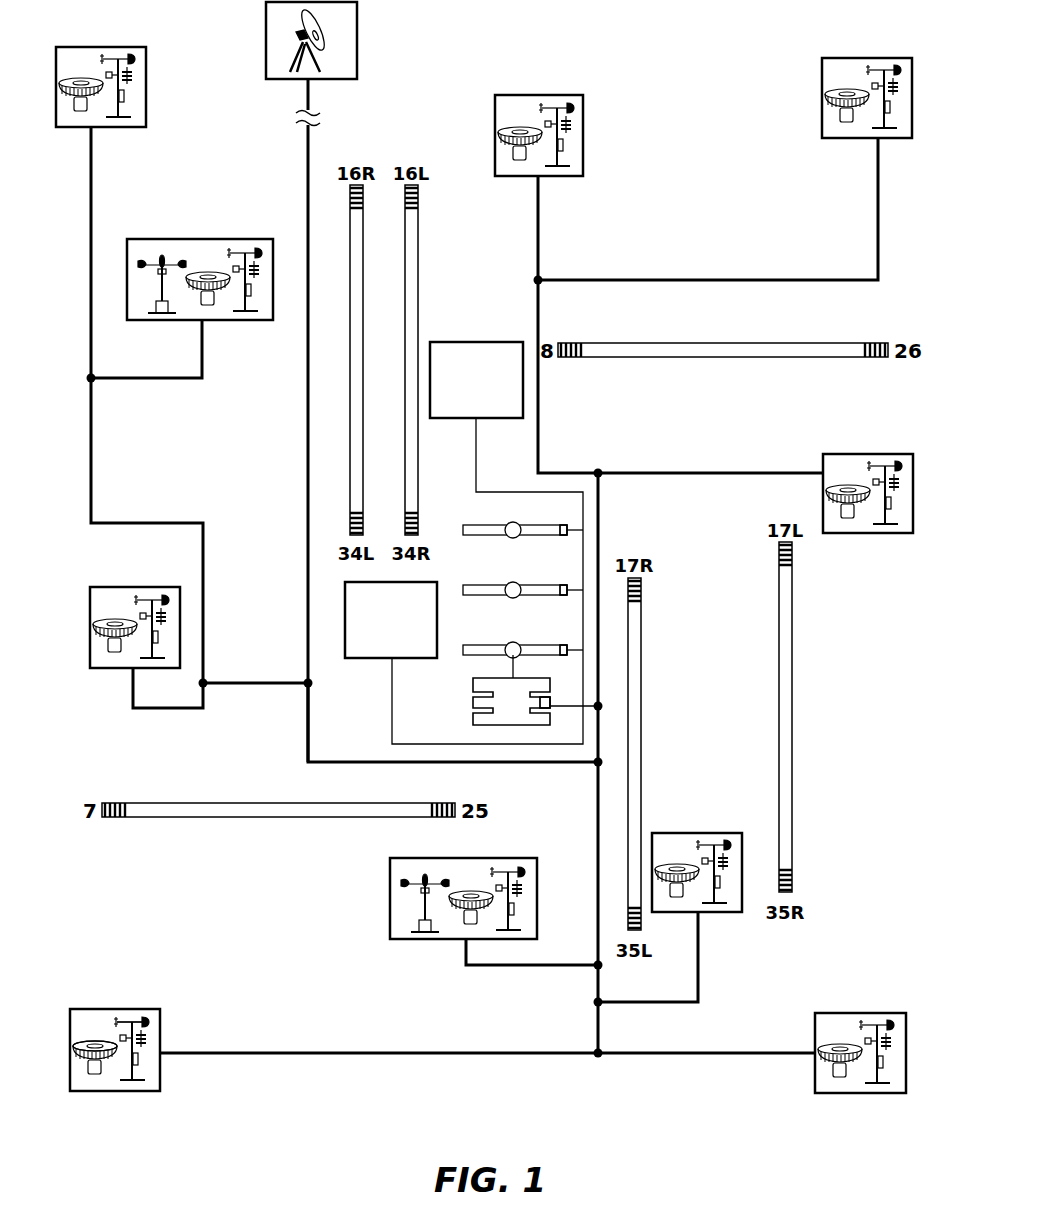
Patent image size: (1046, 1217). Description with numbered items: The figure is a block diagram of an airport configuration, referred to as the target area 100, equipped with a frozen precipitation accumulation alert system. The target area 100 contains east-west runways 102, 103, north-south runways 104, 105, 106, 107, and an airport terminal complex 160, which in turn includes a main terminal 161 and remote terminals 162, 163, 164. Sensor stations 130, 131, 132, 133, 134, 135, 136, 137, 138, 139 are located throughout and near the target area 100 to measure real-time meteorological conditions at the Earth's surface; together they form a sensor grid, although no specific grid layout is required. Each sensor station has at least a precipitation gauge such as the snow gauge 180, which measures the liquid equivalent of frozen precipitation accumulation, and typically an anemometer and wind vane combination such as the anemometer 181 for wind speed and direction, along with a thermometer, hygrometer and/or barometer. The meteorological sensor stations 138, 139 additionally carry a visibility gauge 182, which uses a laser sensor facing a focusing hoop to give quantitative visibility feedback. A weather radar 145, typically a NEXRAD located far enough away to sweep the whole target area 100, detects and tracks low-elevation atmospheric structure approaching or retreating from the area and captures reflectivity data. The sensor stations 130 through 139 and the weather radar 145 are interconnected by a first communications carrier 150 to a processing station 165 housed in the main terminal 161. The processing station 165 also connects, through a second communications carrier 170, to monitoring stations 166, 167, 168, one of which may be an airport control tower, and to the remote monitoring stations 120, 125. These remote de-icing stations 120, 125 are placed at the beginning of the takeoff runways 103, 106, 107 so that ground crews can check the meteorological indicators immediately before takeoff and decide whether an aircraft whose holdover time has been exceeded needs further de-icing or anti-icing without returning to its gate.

The target area 100 is at (672, 80).
The east-west runway 102 is at (233, 818).
The east-west runway 103 is at (737, 358).
The north-south runway 104 is at (642, 730).
The north-south runway 105 is at (793, 700).
The north-south runway 106 is at (364, 380).
The north-south runway 107 is at (419, 242).
The remote monitoring station 120 is at (363, 659).
The remote monitoring station 125 is at (501, 341).
The sensor station 130 is at (110, 1093).
The sensor station 131 is at (102, 669).
The sensor station 132 is at (146, 62).
The sensor station 133 is at (583, 120).
The sensor station 134 is at (822, 112).
The sensor station 135 is at (878, 534).
The sensor station 136 is at (718, 913).
The sensor station 137 is at (815, 1072).
The meteorological sensor station 138 is at (390, 905).
The meteorological sensor station 139 is at (255, 321).
The weather radar 145 is at (357, 15).
The first communications carrier 150 is at (307, 732).
The airport terminal complex 160 is at (497, 730).
The main terminal 161 is at (472, 718).
The remote terminal 162 is at (475, 655).
The remote terminal 163 is at (482, 596).
The remote terminal 164 is at (482, 536).
The processing station 165 is at (552, 700).
The monitoring station 166 is at (564, 645).
The monitoring station 167 is at (562, 585).
The monitoring station 168 is at (567, 523).
The second communications carrier 170 is at (551, 745).
The snow gauge 180 is at (98, 1040).
The anemometer 181 is at (133, 1013).
The visibility gauge 182 is at (425, 908).